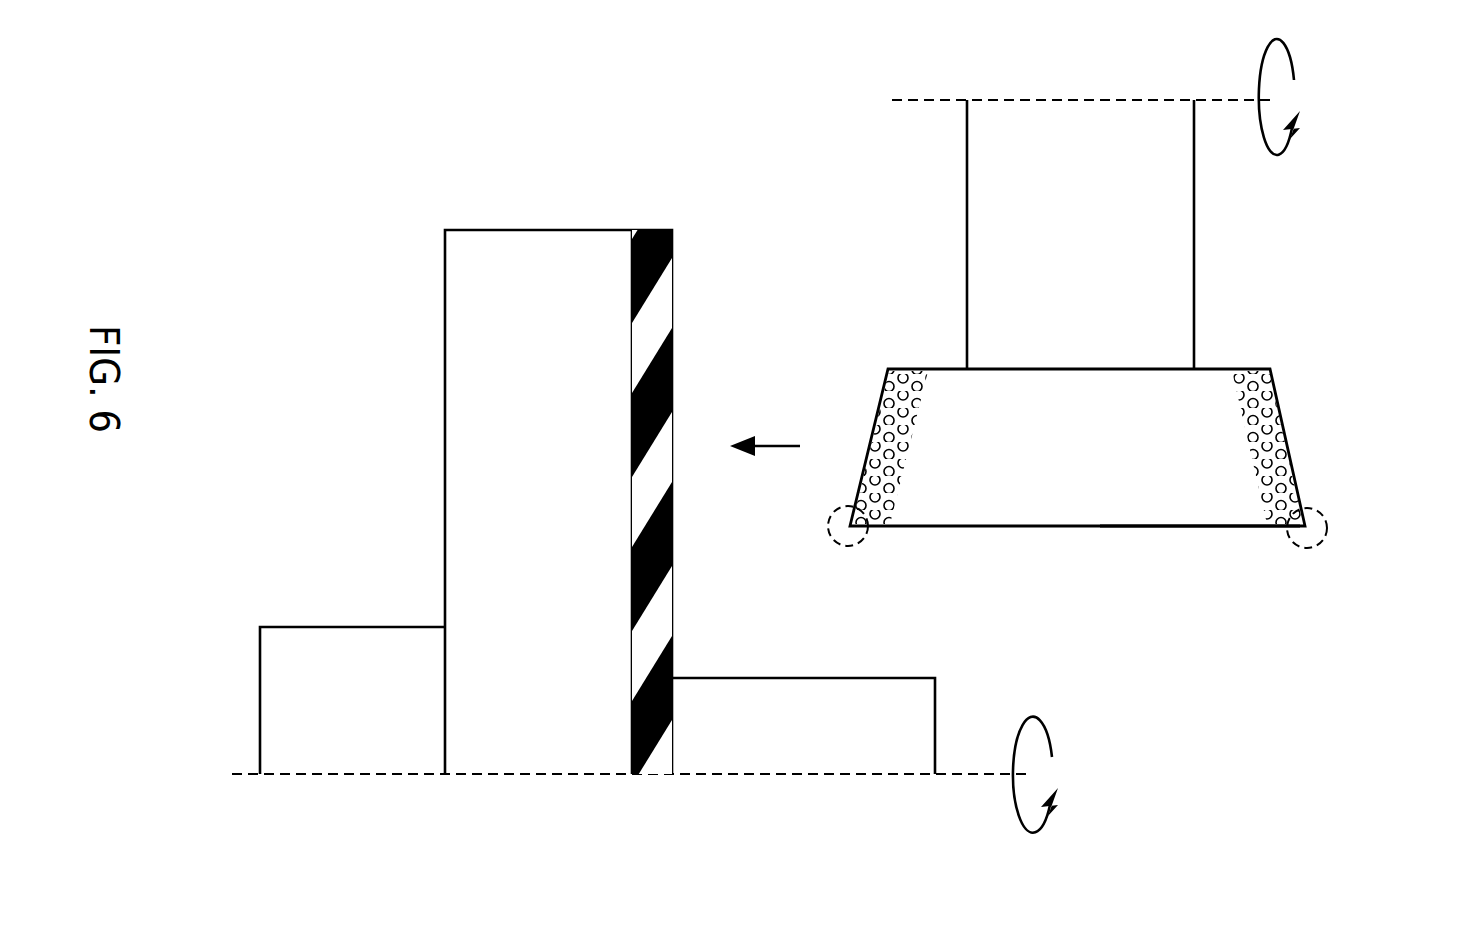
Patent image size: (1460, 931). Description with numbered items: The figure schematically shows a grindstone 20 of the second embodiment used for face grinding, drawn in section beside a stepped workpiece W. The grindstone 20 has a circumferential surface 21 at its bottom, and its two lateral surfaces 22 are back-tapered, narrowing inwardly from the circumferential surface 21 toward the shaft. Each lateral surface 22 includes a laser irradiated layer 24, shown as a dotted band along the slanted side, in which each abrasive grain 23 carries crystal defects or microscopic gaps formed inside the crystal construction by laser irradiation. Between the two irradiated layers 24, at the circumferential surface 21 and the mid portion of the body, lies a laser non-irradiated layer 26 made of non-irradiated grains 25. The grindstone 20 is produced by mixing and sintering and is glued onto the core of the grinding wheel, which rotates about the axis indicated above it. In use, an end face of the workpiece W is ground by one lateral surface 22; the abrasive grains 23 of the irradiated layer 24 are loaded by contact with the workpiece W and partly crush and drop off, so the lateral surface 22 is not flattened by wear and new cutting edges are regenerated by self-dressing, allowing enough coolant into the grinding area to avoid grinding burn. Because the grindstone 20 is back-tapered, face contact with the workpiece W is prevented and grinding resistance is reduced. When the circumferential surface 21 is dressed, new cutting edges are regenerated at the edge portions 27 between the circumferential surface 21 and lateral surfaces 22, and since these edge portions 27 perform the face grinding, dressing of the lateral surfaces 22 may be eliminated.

The workpiece W is at (493, 484).
The grindstone 20 is at (1111, 436).
The circumferential surface 21 is at (1092, 527).
The lateral surface 22 is at (1130, 449).
The abrasive grain 23 is at (890, 497).
The laser irradiated layer 24 is at (1141, 487).
The non-irradiated grain 25 is at (1210, 518).
The laser non-irradiated layer 26 is at (1200, 585).
The edge portion 27 is at (830, 545).